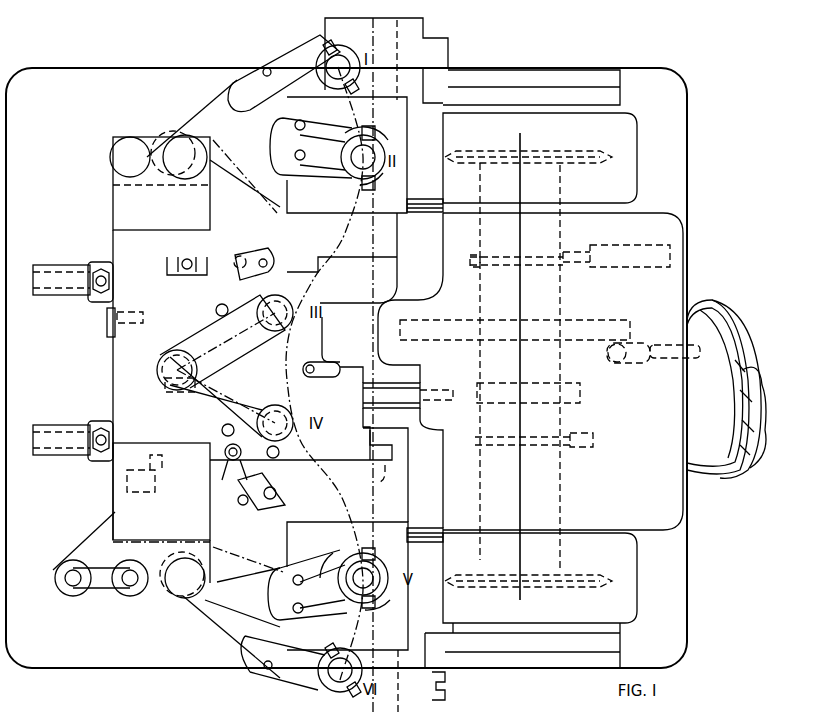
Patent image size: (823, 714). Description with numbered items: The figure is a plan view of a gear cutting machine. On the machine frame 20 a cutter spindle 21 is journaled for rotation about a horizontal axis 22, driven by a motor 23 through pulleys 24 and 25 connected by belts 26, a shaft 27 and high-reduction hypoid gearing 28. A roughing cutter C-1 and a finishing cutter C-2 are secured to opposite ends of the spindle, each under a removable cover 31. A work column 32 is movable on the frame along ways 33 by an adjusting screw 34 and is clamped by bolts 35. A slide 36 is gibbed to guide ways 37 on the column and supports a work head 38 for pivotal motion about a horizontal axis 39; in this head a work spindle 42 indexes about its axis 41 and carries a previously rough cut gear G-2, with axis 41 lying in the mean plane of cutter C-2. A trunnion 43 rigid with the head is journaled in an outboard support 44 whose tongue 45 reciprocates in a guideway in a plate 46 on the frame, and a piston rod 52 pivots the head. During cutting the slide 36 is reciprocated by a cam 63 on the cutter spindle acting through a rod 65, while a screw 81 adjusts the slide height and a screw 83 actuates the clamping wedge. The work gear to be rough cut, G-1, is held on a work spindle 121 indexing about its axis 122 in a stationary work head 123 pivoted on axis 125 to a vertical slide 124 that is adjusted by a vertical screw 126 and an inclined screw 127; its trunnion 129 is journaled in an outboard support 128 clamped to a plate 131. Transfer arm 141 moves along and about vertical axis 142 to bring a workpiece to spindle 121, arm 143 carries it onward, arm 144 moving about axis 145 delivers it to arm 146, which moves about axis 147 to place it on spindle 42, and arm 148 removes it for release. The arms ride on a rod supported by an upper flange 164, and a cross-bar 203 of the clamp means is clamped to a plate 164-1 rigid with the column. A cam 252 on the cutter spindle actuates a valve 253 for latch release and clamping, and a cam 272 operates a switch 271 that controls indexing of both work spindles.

The machine frame 20 is at (100, 574).
The cutter spindle 21 is at (558, 492).
The horizontal axis 22 is at (557, 473).
The motor 23 is at (742, 482).
The pulley 24 is at (698, 480).
The pulley 25 is at (692, 330).
The belts 26 is at (733, 352).
The shaft 27 is at (672, 362).
The high-reduction hypoid gearing 28 is at (633, 325).
The removable cover 31 is at (540, 368).
The work column 32 is at (134, 357).
The ways 33 is at (70, 282).
The adjusting screw 34 is at (110, 318).
The bolts 35 is at (104, 270).
The slide 36 is at (404, 485).
The guide ways 37 is at (157, 486).
The work head 38 is at (347, 586).
The horizontal axis 39 is at (380, 654).
The work spindle axis 41 is at (388, 560).
The work spindle 42 is at (392, 592).
The trunnion 43 is at (432, 700).
The outboard support 44 is at (330, 692).
The tongue 45 is at (445, 688).
The plate 46 is at (563, 665).
The piston rod 52 is at (436, 212).
The cam 63 is at (583, 393).
The rod 65 is at (391, 395).
The screw 81 is at (236, 458).
The screw 83 is at (278, 460).
The work spindle 121 is at (385, 170).
The axis 122 is at (372, 150).
The work head 123 is at (347, 155).
The vertical slide 124 is at (342, 258).
The axis 125 is at (378, 252).
The vertical screw 126 is at (188, 260).
The inclined adjusting screw 127 is at (250, 256).
The outboard support 128 is at (386, 60).
The trunnion 129 is at (425, 27).
The plate 131 is at (531, 87).
The arm 141 is at (284, 73).
The vertical axis 142 is at (187, 158).
The arm 143 is at (307, 148).
The arm 144 is at (222, 366).
The axis 145 is at (176, 372).
The arm 146 is at (304, 585).
The axis 147 is at (184, 580).
The arm 148 is at (283, 660).
The upper flange 164 is at (122, 188).
The plate 164-1 is at (200, 713).
The cross-bar 203 is at (107, 713).
The cam 252 is at (556, 270).
The valve 253 is at (603, 247).
The switch 271 is at (596, 437).
The cam 272 is at (585, 449).
The roughing cutter C-1 is at (572, 160).
The finishing cutter C-2 is at (570, 585).
The work gear to be rough cut G-1 is at (391, 156).
The previously rough cut gear G-2 is at (353, 570).